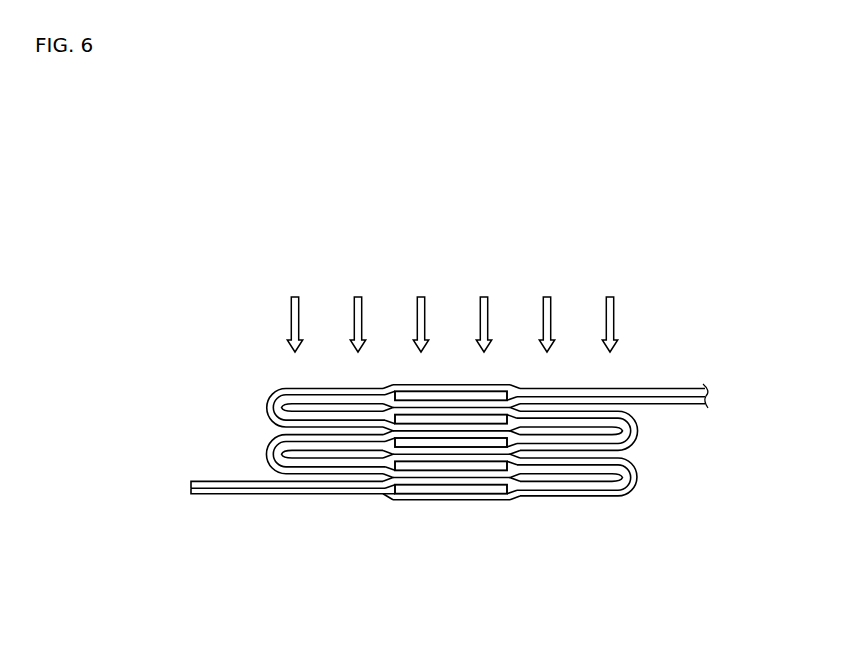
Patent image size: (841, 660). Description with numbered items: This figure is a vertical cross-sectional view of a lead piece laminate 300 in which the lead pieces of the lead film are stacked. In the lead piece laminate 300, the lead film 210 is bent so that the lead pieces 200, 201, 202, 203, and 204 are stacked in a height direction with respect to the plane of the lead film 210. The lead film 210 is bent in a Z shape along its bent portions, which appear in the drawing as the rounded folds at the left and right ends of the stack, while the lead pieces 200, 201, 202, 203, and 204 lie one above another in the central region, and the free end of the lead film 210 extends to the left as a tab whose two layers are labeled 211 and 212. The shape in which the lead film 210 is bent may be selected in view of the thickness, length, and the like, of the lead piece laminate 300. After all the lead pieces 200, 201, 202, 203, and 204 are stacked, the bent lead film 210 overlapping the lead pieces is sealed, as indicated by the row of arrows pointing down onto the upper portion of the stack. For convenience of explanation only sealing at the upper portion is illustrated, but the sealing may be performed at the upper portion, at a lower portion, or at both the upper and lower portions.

The lead piece laminate 300 is at (456, 232).
The lead piece 200 is at (413, 491).
The lead piece 201 is at (402, 467).
The lead piece 202 is at (447, 443).
The lead piece 203 is at (463, 420).
The lead piece 204 is at (488, 398).
The lead film 210 is at (220, 489).
The first tab layer 211 is at (205, 481).
The second tab layer 212 is at (190, 495).